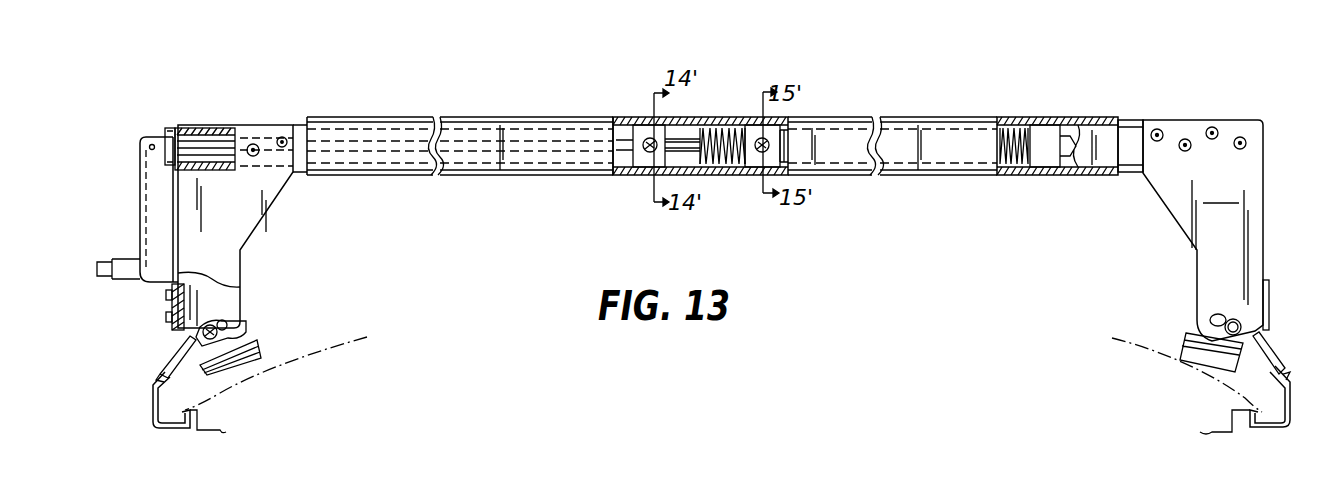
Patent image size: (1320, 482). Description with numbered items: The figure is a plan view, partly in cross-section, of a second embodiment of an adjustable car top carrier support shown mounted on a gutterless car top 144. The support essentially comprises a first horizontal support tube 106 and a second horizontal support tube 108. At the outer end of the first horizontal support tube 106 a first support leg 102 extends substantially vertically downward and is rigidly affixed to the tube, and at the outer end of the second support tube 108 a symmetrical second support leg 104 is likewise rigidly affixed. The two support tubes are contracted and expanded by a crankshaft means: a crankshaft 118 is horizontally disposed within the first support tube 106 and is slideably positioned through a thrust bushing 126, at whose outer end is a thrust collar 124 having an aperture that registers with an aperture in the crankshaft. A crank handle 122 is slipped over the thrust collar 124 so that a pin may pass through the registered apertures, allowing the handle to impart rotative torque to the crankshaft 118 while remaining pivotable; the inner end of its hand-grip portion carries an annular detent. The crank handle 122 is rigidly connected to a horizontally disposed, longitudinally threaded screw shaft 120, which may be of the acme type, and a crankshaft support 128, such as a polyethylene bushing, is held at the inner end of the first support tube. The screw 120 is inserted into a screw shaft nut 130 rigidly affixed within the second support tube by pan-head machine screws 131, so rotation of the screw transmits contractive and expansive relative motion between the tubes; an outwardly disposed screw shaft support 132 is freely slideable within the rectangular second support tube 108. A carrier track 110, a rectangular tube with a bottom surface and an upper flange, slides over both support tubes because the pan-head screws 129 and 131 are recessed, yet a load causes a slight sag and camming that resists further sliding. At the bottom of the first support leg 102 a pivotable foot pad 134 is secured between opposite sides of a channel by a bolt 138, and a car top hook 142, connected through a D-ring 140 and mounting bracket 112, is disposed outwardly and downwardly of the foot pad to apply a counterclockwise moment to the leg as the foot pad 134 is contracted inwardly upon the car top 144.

The first support leg 102 is at (235, 226).
The second support leg 104 is at (1221, 192).
The first horizontal support tube 106 is at (297, 124).
The second horizontal support tube 108 is at (1134, 118).
The carrier track 110 is at (942, 116).
The mounting bracket 112 is at (177, 335).
The crankshaft 118 is at (684, 151).
The screw shaft 120 is at (728, 160).
The crank handle 122 is at (140, 208).
The thrust collar 124 is at (166, 128).
The thrust bushing 126 is at (172, 128).
The crankshaft support 128 is at (640, 137).
The pan-head screws 129 is at (667, 122).
The screw shaft nut 130 is at (776, 130).
The pan-head machine screws 131 is at (760, 128).
The screw shaft support 132 is at (1037, 135).
The foot pad 134 is at (258, 357).
The bolt 138 is at (223, 331).
The D-ring 140 is at (172, 360).
The car top hook 142 is at (173, 432).
The car top 144 is at (372, 324).